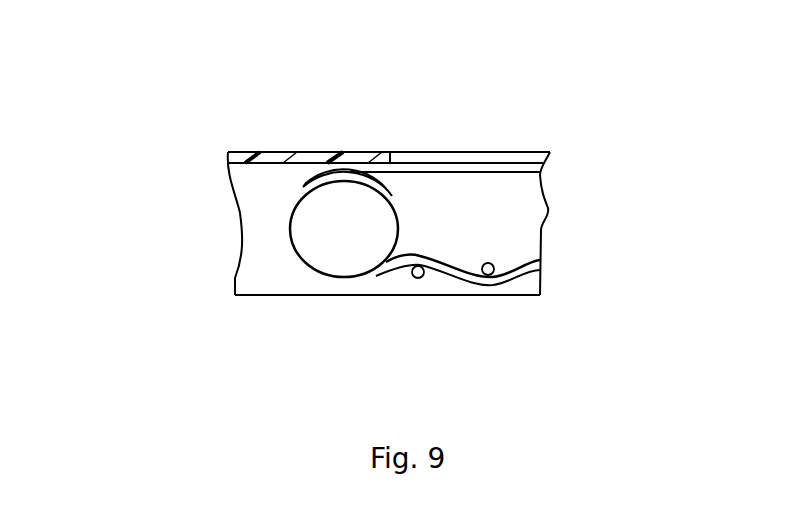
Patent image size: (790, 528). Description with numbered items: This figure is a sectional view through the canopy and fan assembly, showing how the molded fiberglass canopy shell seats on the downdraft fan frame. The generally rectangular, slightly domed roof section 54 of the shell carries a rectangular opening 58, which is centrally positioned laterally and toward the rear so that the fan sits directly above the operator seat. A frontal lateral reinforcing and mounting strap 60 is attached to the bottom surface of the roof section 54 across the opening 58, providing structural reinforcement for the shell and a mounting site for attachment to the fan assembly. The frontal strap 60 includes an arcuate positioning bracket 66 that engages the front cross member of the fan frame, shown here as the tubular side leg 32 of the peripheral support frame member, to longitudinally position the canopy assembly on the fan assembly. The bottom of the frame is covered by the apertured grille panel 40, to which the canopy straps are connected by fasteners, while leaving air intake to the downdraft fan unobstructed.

The side leg 32 is at (290, 225).
The apertured grille panel 40 is at (458, 277).
The roof section 54 is at (353, 153).
The rectangular opening 58 is at (424, 156).
The frontal strap 60 is at (477, 168).
The arcuate positioning bracket 66 is at (310, 182).